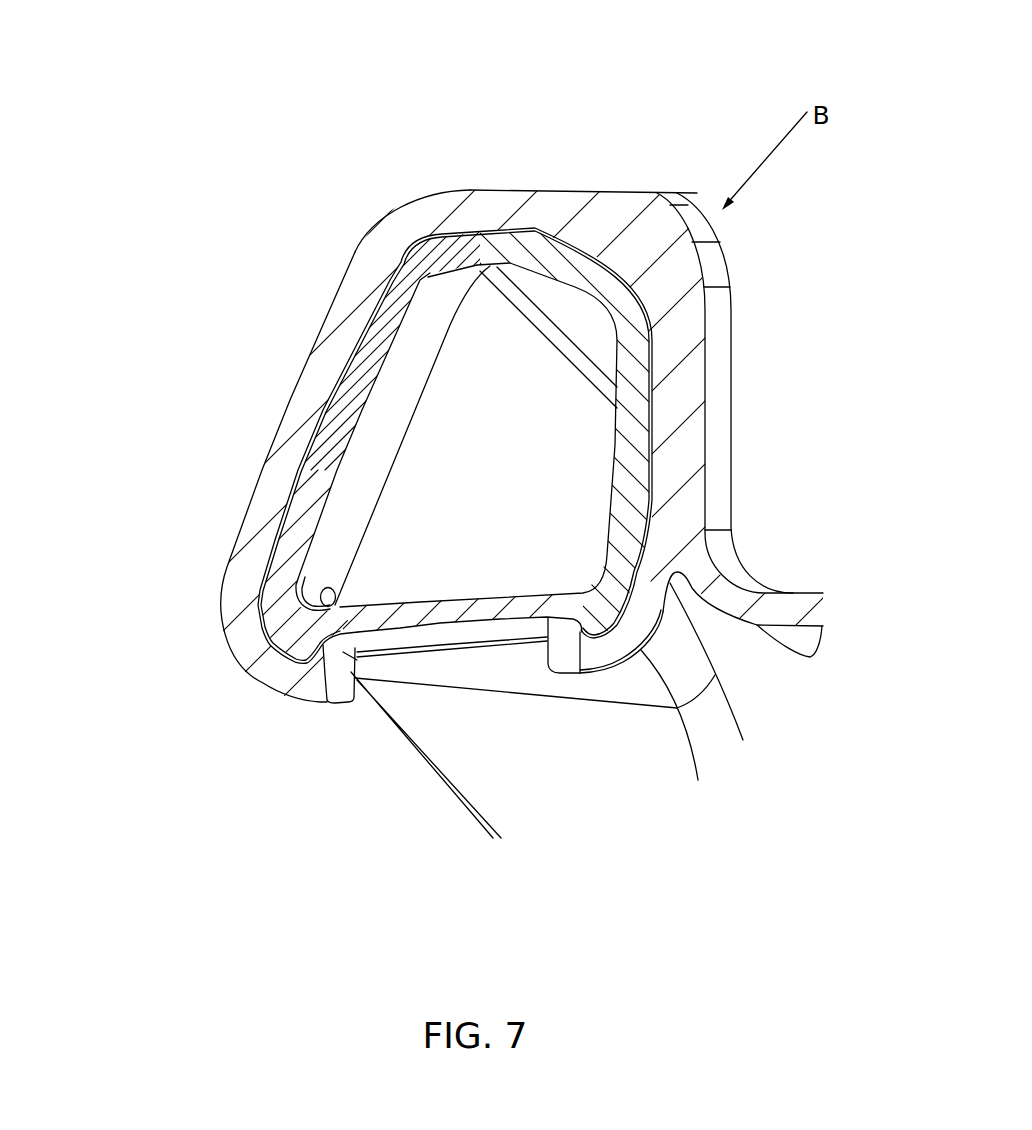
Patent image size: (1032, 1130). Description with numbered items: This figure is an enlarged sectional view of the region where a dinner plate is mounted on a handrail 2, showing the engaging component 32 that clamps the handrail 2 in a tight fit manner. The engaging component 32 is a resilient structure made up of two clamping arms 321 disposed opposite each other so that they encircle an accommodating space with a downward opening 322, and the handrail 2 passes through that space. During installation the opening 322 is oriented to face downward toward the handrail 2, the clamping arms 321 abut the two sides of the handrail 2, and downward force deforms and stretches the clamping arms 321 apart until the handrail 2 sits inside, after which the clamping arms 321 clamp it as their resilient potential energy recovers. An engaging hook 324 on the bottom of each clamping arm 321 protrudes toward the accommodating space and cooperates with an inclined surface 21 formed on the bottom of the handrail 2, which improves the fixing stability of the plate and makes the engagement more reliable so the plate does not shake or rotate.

The handrail 2 is at (437, 248).
The inclined surface 21 is at (328, 655).
The engaging component 32 is at (551, 210).
The clamping arm 321 is at (303, 408).
The downward opening 322 is at (451, 677).
The engaging hook 324 is at (345, 685).